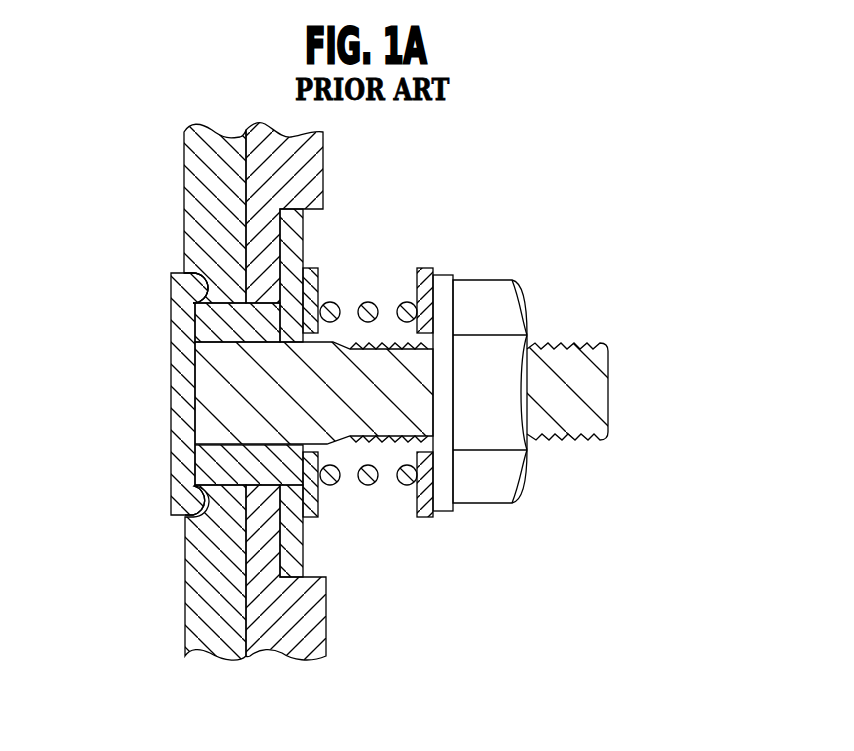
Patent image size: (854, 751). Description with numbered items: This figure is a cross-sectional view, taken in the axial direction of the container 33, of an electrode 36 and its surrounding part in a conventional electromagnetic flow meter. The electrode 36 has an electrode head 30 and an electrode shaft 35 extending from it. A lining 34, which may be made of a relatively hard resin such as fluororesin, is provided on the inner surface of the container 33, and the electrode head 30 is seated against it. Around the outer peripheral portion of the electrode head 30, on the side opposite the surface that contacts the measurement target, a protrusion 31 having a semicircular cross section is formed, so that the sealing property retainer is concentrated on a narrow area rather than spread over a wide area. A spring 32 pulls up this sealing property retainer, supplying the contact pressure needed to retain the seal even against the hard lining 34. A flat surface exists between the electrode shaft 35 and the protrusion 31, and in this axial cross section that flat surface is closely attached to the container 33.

The electrode head 30 is at (195, 388).
The protrusion 31 is at (213, 273).
The spring 32 is at (365, 294).
The container 33 is at (307, 173).
The lining 34 is at (203, 587).
The electrode shaft 35 is at (337, 413).
The electrode 36 is at (500, 390).